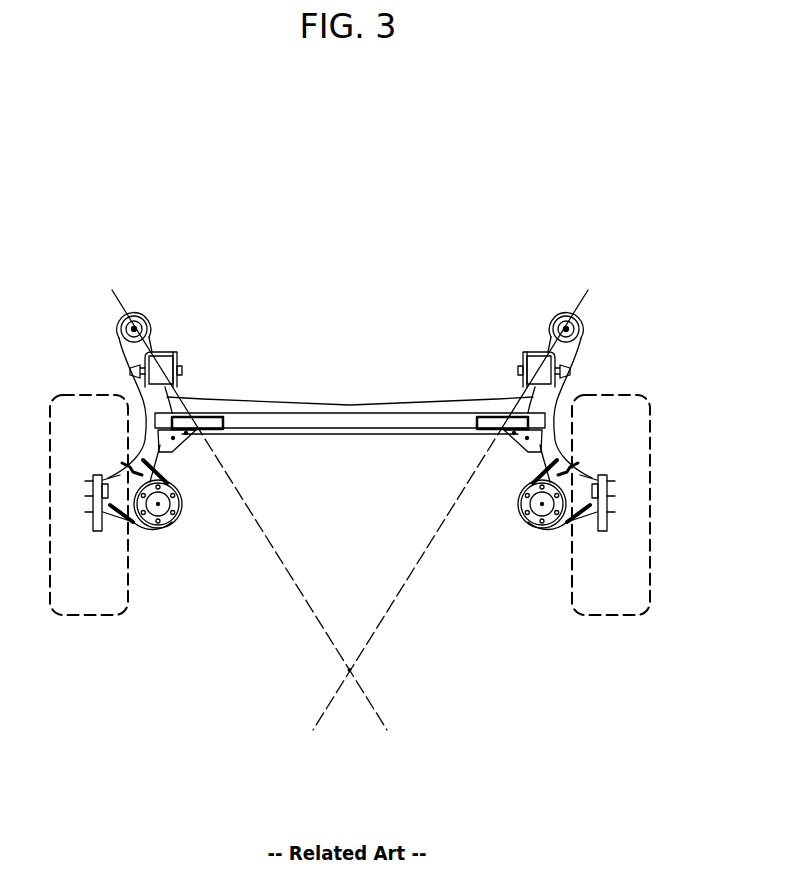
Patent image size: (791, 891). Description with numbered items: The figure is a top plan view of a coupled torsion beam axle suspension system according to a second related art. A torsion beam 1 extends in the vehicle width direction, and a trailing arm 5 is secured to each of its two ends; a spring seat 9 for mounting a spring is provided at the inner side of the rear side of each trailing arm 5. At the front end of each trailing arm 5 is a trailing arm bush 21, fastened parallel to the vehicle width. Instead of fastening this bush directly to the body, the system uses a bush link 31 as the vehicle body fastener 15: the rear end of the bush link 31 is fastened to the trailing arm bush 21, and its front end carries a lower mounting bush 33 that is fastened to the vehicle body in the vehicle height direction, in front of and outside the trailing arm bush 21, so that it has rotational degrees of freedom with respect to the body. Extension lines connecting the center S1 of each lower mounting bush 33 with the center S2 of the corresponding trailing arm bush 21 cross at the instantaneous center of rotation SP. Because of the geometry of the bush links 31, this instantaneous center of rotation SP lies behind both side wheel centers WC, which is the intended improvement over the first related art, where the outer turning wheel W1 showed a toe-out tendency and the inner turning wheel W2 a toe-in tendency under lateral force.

The torsion beam 1 is at (347, 436).
The trailing arm 5 is at (163, 455).
The spring seat 9 is at (179, 510).
The vehicle body fastener 15 is at (110, 313).
The trailing arm bush 21 is at (166, 362).
The bush link 31 is at (123, 347).
The lower mounting bush 33 is at (144, 318).
The center of lower mounting bush S1 is at (142, 331).
The center of trailing arm bush S2 is at (161, 371).
The instantaneous center of rotation SP is at (351, 670).
The wheel center WC is at (86, 502).
The outer turning wheel W1 is at (102, 607).
The inner turning wheel W2 is at (614, 616).